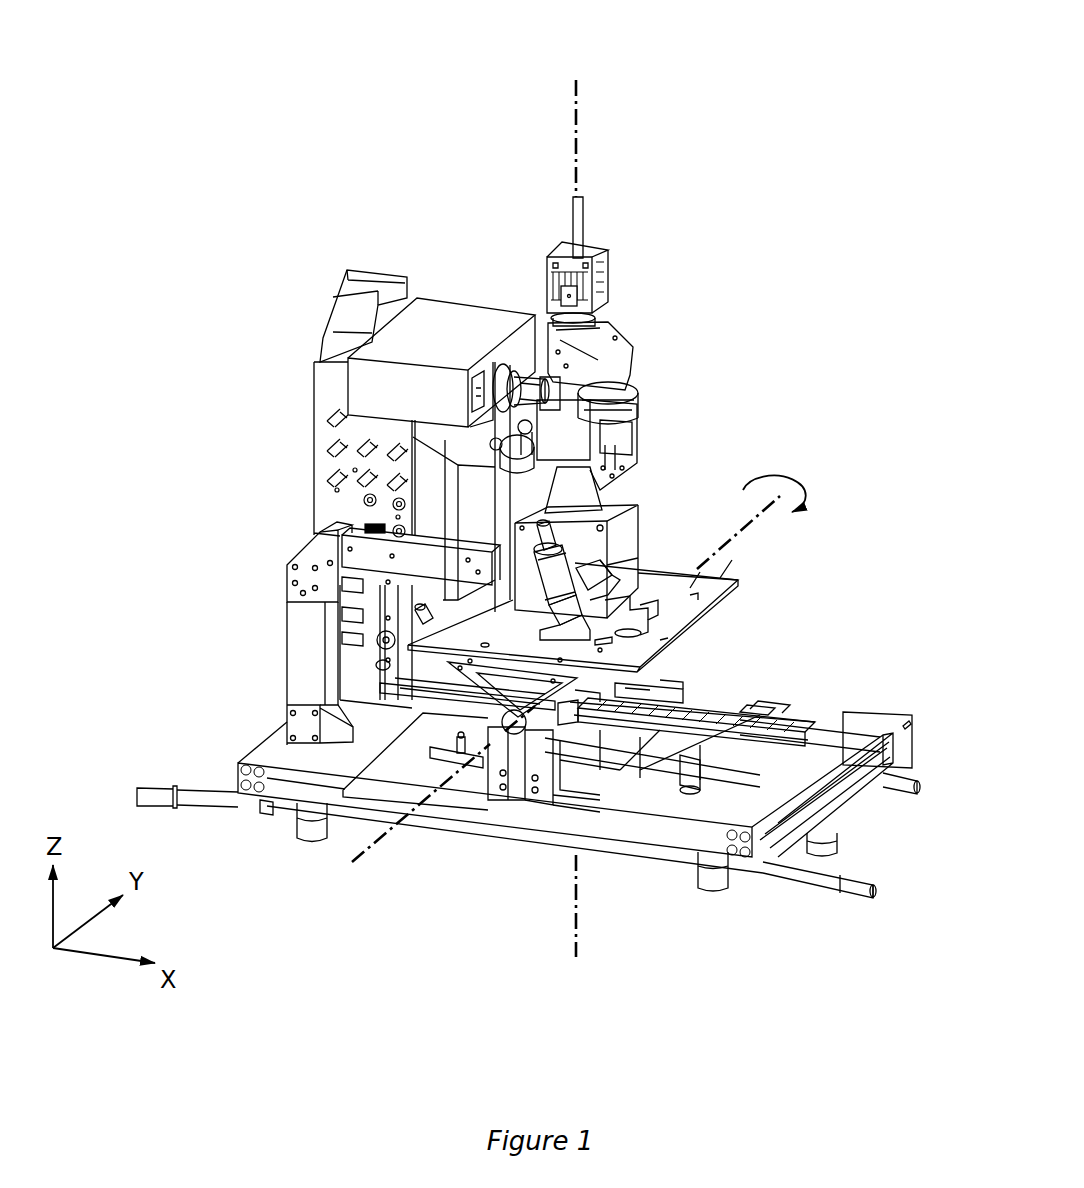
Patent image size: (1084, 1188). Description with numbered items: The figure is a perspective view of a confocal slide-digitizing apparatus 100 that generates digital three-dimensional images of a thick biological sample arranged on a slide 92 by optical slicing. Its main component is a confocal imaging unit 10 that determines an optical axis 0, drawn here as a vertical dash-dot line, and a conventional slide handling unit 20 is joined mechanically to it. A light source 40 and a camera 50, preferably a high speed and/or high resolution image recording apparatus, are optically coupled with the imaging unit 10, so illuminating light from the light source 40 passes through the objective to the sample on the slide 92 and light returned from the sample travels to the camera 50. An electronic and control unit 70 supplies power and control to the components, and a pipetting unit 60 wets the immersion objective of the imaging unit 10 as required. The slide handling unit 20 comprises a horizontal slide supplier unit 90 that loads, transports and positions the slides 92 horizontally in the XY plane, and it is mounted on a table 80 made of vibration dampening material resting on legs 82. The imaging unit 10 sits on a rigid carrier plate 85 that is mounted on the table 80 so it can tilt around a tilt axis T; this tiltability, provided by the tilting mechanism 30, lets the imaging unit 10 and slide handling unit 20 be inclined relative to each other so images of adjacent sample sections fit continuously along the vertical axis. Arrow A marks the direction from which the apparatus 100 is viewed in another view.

The confocal slide-digitizing apparatus 100 is at (870, 153).
The optical axis 0 is at (580, 132).
The confocal imaging unit 10 is at (670, 391).
The slide handling unit 20 is at (722, 657).
The tilting mechanism 30 is at (245, 548).
The light source 40 is at (470, 345).
The camera 50 is at (610, 262).
The pipetting unit 60 is at (650, 502).
The electronic and control unit 70 is at (330, 352).
The table 80 is at (518, 805).
The legs 82 is at (822, 845).
The carrier plate 85 is at (740, 585).
The slide supplier unit 90 is at (727, 728).
The slide 92 is at (753, 713).
The arrow A is at (215, 413).
The tilt axis T is at (357, 865).